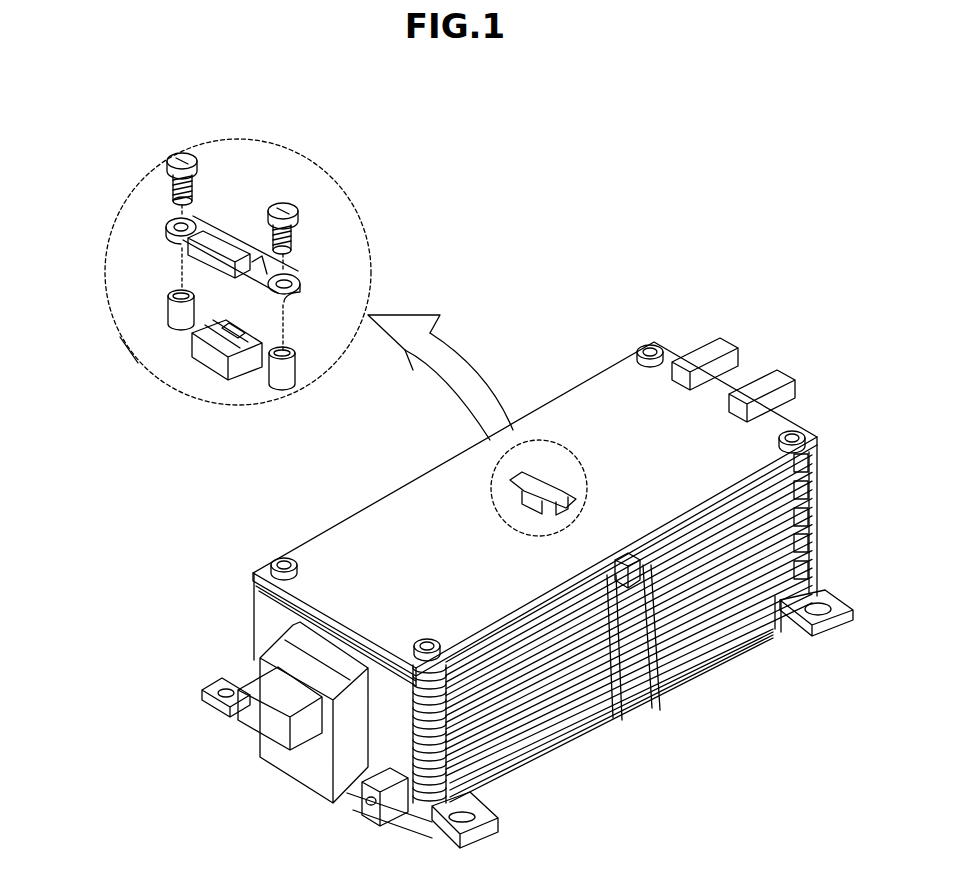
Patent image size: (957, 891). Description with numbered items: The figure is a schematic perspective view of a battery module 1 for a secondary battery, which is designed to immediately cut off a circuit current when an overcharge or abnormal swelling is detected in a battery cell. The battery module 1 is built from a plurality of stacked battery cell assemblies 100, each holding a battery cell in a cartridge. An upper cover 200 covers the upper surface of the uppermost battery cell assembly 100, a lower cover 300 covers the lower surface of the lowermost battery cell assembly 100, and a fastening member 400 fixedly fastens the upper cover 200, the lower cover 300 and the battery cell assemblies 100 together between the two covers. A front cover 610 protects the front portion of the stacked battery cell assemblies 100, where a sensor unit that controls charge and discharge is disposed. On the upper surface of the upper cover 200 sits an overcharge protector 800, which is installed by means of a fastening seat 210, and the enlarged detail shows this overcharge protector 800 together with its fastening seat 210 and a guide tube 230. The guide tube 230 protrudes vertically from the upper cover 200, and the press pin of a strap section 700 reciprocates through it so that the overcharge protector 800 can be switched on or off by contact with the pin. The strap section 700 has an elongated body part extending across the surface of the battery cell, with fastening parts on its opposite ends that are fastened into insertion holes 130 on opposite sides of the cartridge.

The battery module 1 is at (612, 274).
The battery cell assembly 100 is at (818, 460).
The insertion hole 130 is at (617, 717).
The upper cover 200 is at (569, 405).
The fastening seat 210 is at (168, 304).
The guide tube 230 is at (197, 365).
The lower cover 300 is at (717, 653).
The fastening member 400 is at (283, 556).
The front cover 610 is at (383, 818).
The strap section 700 is at (650, 700).
The overcharge protector 800 is at (222, 238).